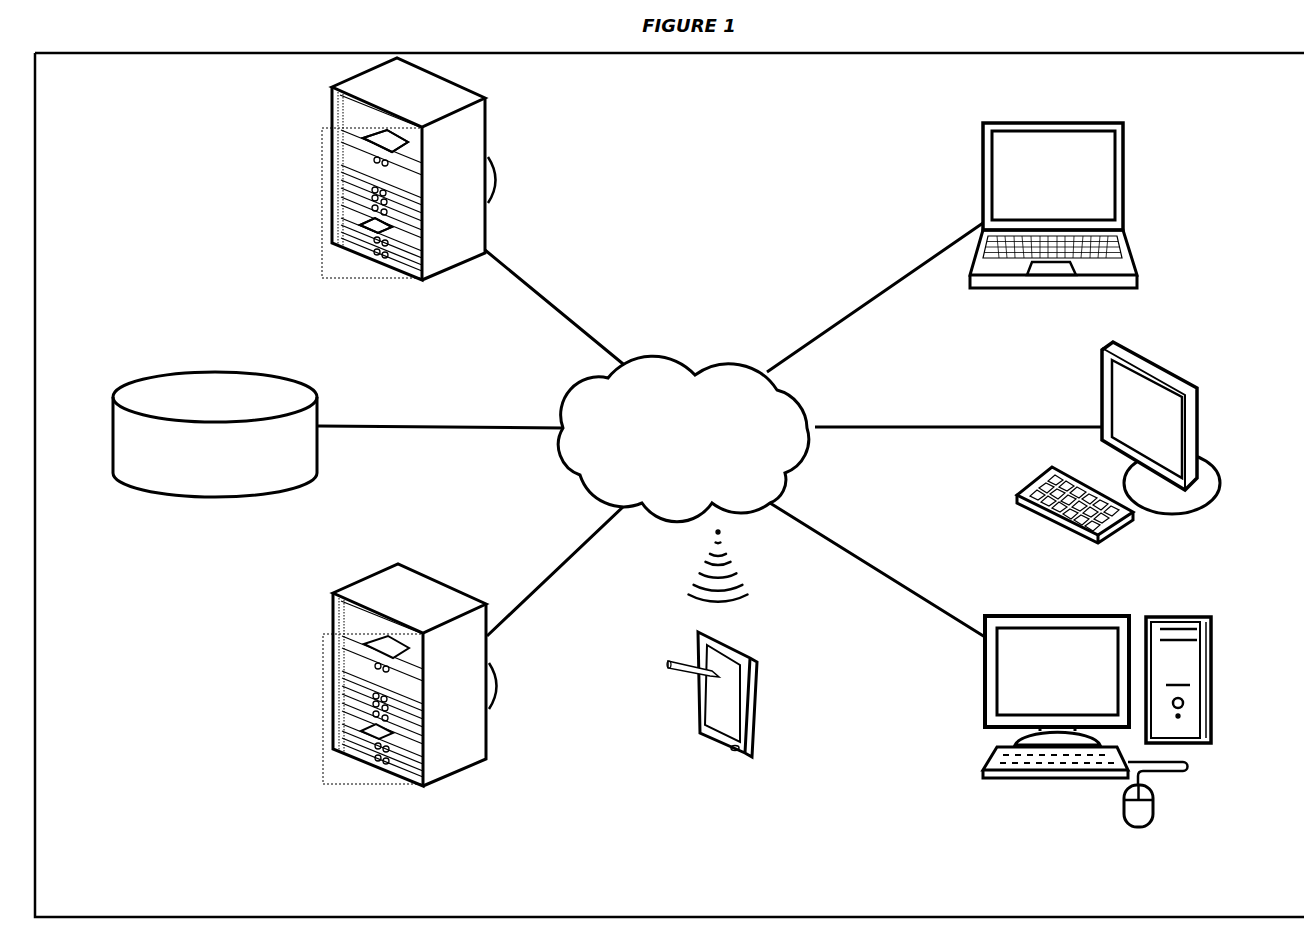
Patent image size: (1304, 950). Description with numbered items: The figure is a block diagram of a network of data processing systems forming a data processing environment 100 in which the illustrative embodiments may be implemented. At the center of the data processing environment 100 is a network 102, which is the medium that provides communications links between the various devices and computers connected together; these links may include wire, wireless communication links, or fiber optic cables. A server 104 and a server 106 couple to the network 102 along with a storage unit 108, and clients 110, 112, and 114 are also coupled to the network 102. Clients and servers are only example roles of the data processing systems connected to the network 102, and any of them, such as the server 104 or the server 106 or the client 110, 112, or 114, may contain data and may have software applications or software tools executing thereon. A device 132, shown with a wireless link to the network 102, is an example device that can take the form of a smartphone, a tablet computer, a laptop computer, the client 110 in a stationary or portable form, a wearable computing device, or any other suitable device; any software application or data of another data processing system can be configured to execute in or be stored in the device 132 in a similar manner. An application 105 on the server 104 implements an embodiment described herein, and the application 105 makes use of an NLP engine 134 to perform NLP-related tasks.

The data processing environment 100 is at (82, 80).
The network 102 is at (668, 460).
The server 104 is at (436, 303).
The application 105 is at (392, 145).
The server 106 is at (436, 810).
The storage unit 108 is at (196, 476).
The client 110 is at (1247, 536).
The client 112 is at (1109, 677).
The client 114 is at (1104, 185).
The device 132 is at (779, 793).
The NLP engine 134 is at (360, 226).